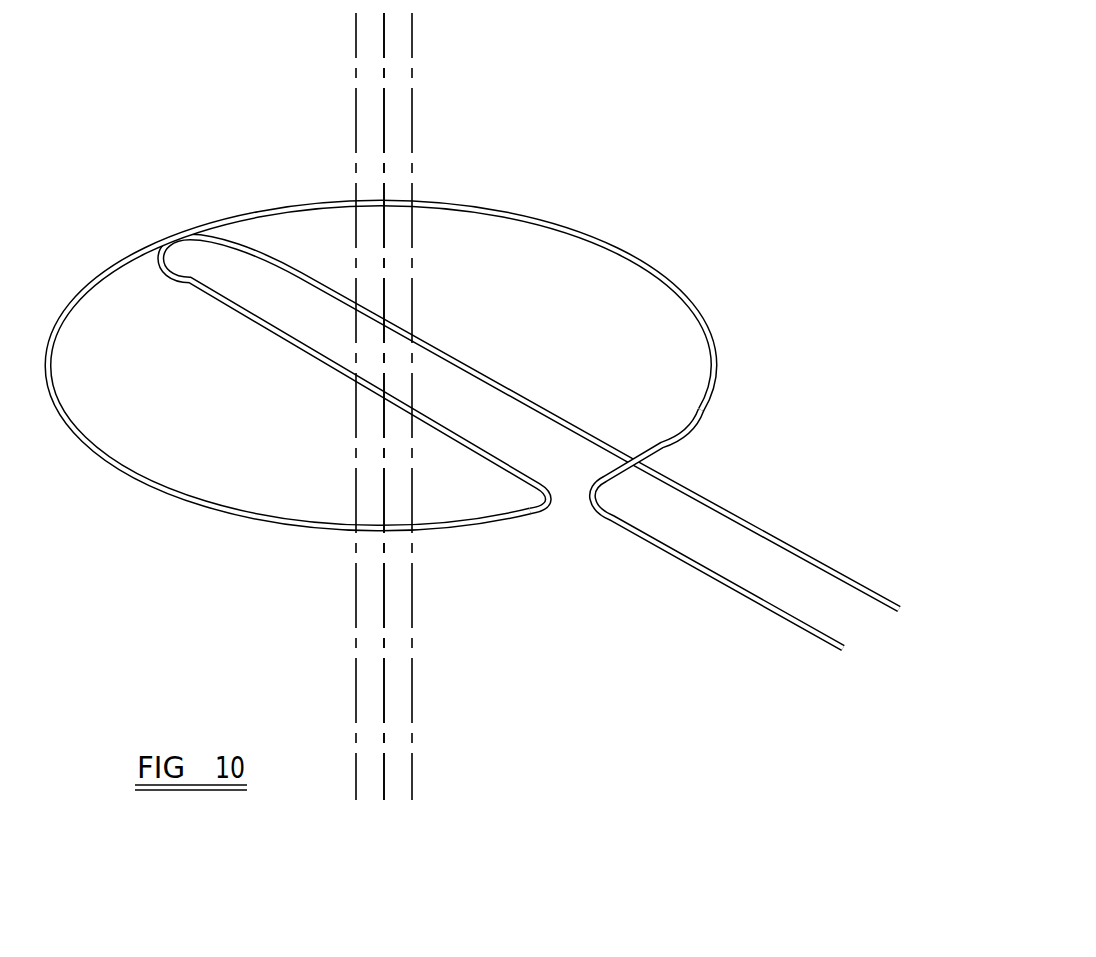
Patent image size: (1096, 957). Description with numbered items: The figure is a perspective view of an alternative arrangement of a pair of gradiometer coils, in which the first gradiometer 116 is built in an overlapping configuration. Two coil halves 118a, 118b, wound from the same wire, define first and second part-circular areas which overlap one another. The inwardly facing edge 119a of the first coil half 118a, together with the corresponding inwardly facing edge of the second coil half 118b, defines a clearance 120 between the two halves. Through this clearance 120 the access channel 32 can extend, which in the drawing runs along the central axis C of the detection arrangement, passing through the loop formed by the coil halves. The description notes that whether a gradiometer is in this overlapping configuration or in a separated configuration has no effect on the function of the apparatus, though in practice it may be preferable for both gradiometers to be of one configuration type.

The access channel 32 is at (393, 99).
The first gradiometer 116 is at (473, 357).
The first coil half 118a is at (237, 512).
The second coil half 118b is at (570, 222).
The inwardly facing edge of first coil half 119a is at (293, 340).
The clearance 120 is at (532, 446).
The central axis C is at (385, 667).